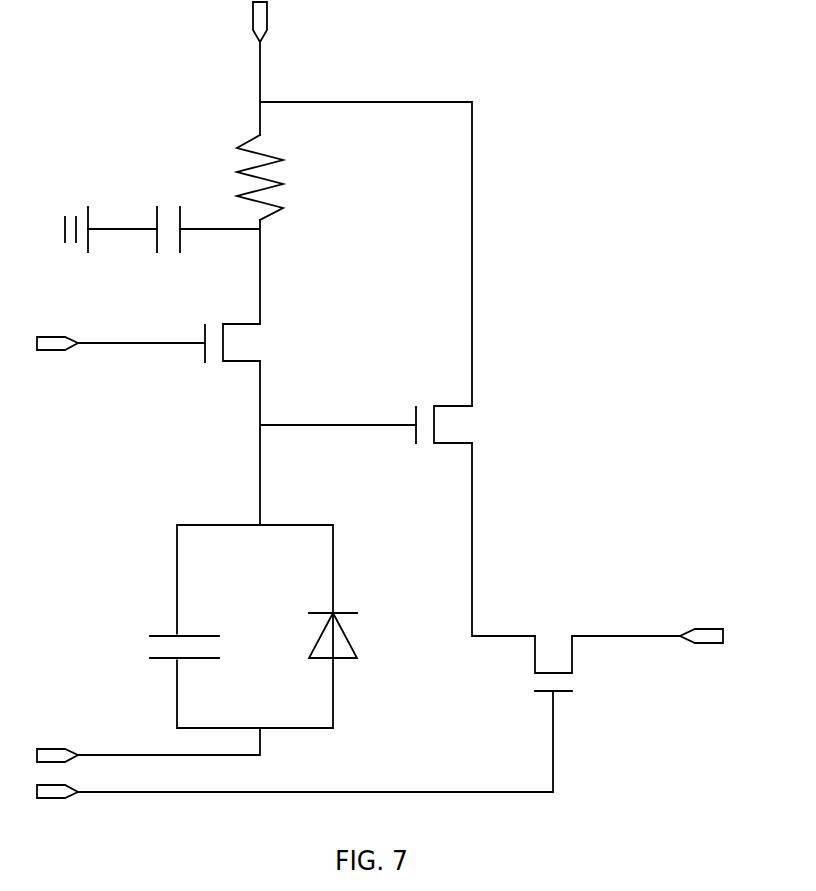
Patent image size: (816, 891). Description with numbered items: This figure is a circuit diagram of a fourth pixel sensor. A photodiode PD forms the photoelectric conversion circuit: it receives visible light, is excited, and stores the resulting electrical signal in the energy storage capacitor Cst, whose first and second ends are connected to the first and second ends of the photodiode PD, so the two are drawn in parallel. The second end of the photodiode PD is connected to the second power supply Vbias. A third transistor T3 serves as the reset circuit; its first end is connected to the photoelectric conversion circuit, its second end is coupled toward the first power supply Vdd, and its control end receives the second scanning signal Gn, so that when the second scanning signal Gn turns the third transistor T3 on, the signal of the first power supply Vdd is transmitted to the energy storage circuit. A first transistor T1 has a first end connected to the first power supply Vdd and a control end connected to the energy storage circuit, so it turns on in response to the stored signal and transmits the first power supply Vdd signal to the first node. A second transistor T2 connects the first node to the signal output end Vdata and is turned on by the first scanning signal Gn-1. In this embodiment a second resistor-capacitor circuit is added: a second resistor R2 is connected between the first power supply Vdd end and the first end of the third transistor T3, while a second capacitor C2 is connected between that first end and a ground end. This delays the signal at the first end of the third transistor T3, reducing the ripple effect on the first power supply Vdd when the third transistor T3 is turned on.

The first power supply Vdd is at (285, 22).
The second resistor R2 is at (278, 177).
The second capacitor C2 is at (124, 217).
The second scanning signal Gn is at (57, 330).
The third transistor T3 is at (247, 343).
The first transistor T1 is at (456, 424).
The energy storage capacitor Cst is at (166, 644).
The photodiode PD is at (353, 635).
The second transistor T2 is at (553, 649).
The signal output end Vdata is at (701, 625).
The second power supply Vbias is at (50, 742).
The first scanning signal Gn-1 is at (52, 805).